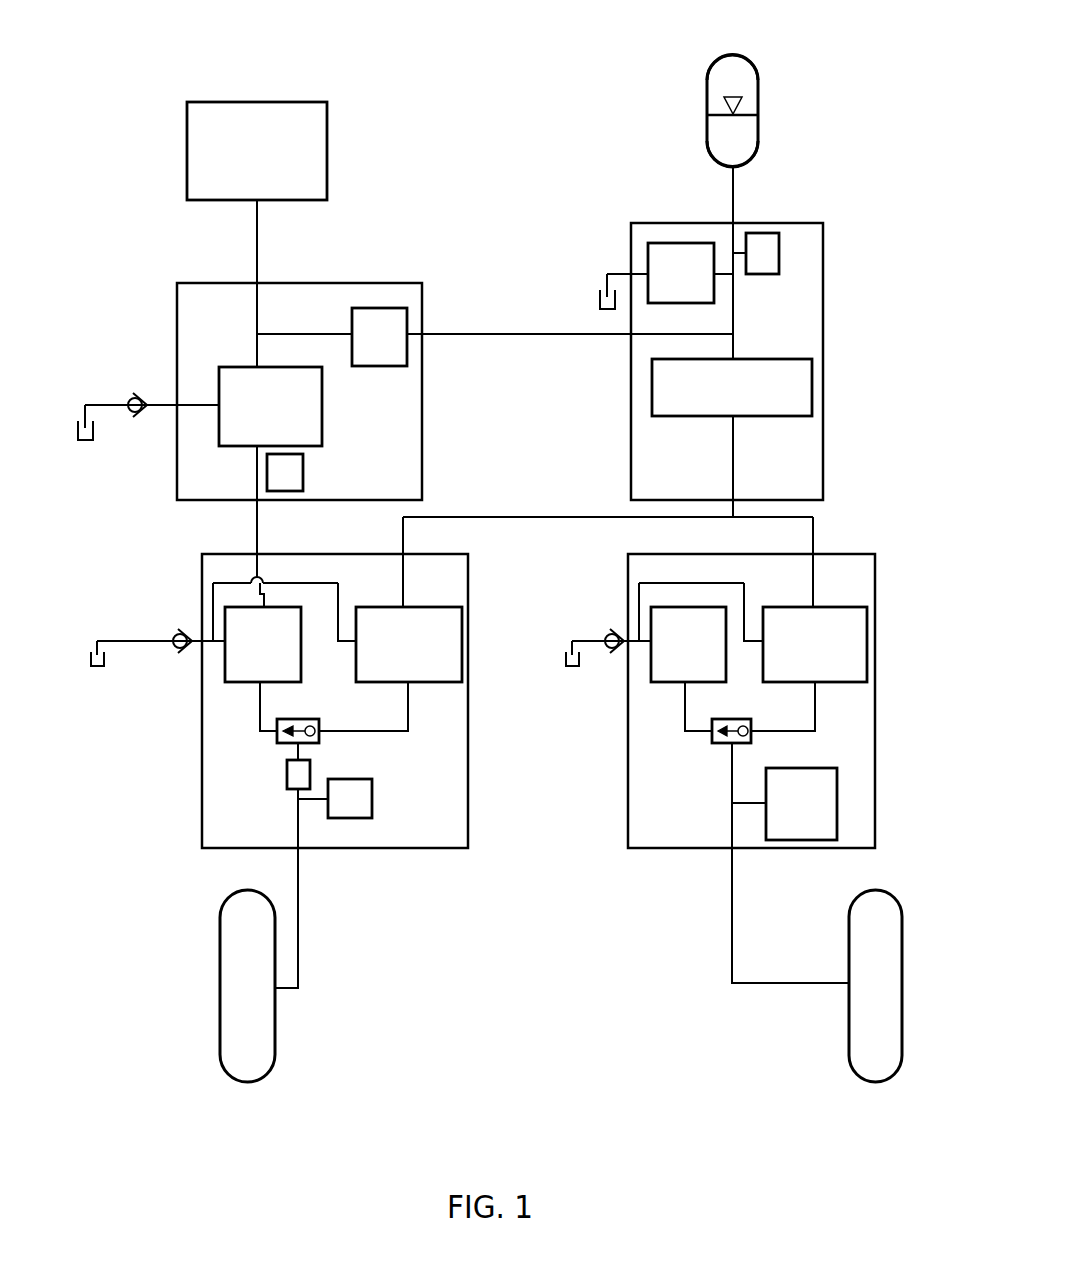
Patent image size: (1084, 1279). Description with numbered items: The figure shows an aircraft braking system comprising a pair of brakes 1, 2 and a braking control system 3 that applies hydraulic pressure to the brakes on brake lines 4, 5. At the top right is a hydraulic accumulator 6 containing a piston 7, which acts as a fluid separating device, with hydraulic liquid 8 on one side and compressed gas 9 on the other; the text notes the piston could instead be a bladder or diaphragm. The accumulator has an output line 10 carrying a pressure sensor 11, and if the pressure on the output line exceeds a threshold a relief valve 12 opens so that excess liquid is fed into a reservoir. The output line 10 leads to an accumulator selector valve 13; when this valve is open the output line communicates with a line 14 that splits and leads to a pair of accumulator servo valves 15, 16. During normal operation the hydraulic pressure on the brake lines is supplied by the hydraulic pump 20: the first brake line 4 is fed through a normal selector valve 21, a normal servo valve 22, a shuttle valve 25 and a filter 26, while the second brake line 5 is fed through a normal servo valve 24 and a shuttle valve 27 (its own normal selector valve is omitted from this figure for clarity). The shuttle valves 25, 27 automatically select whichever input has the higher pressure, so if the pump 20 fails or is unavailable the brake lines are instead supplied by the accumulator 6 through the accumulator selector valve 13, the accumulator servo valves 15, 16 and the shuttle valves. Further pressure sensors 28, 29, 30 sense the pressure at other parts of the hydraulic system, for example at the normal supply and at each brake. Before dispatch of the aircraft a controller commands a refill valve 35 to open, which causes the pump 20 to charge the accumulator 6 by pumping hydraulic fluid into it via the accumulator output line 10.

The brake 1 is at (220, 970).
The brake 2 is at (849, 1040).
The braking control system 3 is at (493, 935).
The brake line 4 is at (298, 937).
The brake line 5 is at (731, 893).
The hydraulic accumulator 6 is at (707, 101).
The piston 7 is at (750, 111).
The hydraulic liquid 8 is at (747, 143).
The compressed gas 9 is at (737, 70).
The output line 10 is at (730, 193).
The pressure sensor 11 is at (779, 253).
The relief valve 12 is at (648, 256).
The accumulator selector valve 13 is at (812, 388).
The line 14 is at (731, 352).
The accumulator servo valve 15 is at (323, 692).
The accumulator servo valve 16 is at (754, 701).
The hydraulic pump 20 is at (187, 142).
The normal selector valve 21 is at (322, 424).
The normal servo valve 22 is at (225, 672).
The normal servo valve 24 is at (651, 668).
The shuttle valve 25 is at (277, 735).
The filter 26 is at (287, 775).
The shuttle valve 27 is at (720, 745).
The pressure sensor 28 is at (303, 481).
The pressure sensor 29 is at (372, 800).
The pressure sensor 30 is at (837, 803).
The refill valve 35 is at (387, 308).